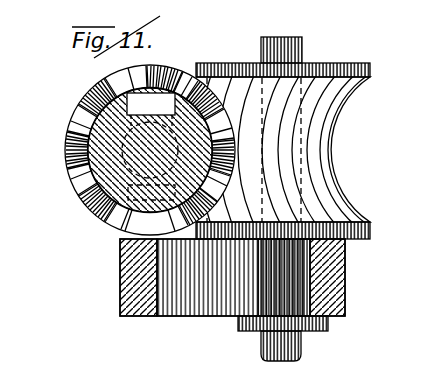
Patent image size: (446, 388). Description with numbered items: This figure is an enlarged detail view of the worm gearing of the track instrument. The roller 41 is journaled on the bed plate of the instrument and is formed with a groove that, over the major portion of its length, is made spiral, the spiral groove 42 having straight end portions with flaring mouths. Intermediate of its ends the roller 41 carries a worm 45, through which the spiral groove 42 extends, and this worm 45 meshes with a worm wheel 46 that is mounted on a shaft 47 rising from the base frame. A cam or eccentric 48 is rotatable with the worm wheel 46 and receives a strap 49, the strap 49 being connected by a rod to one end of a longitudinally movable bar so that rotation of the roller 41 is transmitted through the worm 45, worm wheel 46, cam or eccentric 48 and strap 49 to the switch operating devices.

The roller 41 is at (97, 167).
The spiral groove 42 is at (151, 104).
The worm 45 is at (76, 124).
The worm wheel 46 is at (321, 185).
The shaft 47 is at (299, 47).
The cam or eccentric 48 is at (213, 312).
The strap 49 is at (136, 318).